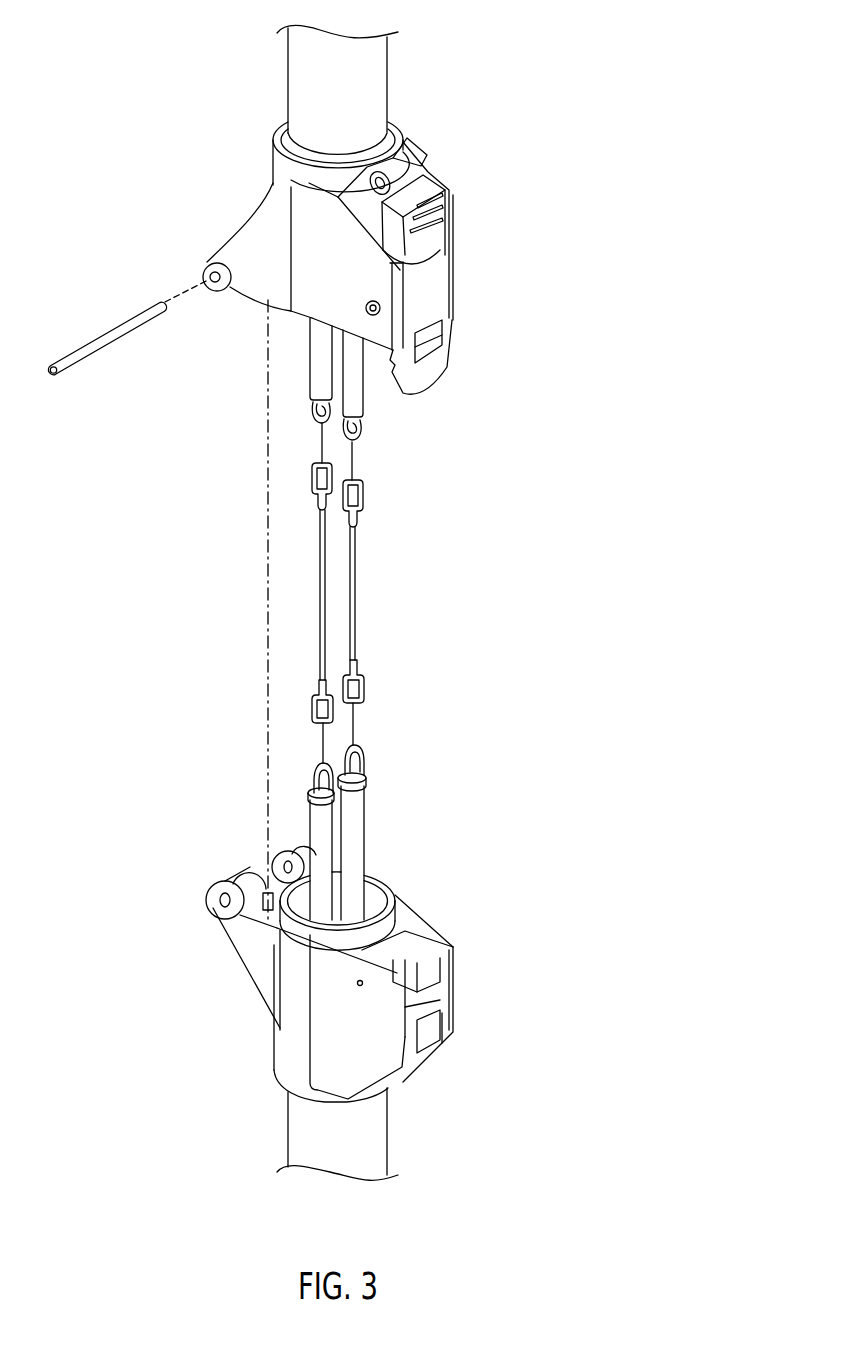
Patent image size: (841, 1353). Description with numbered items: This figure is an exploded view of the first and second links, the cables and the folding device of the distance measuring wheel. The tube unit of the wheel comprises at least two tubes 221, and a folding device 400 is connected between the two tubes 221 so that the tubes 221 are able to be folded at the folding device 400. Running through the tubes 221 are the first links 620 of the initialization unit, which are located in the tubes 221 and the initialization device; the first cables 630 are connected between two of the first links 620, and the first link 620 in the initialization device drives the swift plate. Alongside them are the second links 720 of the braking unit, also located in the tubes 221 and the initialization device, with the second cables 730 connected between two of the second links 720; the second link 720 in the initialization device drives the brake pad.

The tube 221 is at (376, 76).
The folding device 400 is at (452, 247).
The first link 620 is at (357, 402).
The first cable 630 is at (357, 582).
The second link 720 is at (315, 358).
The second cable 730 is at (318, 543).